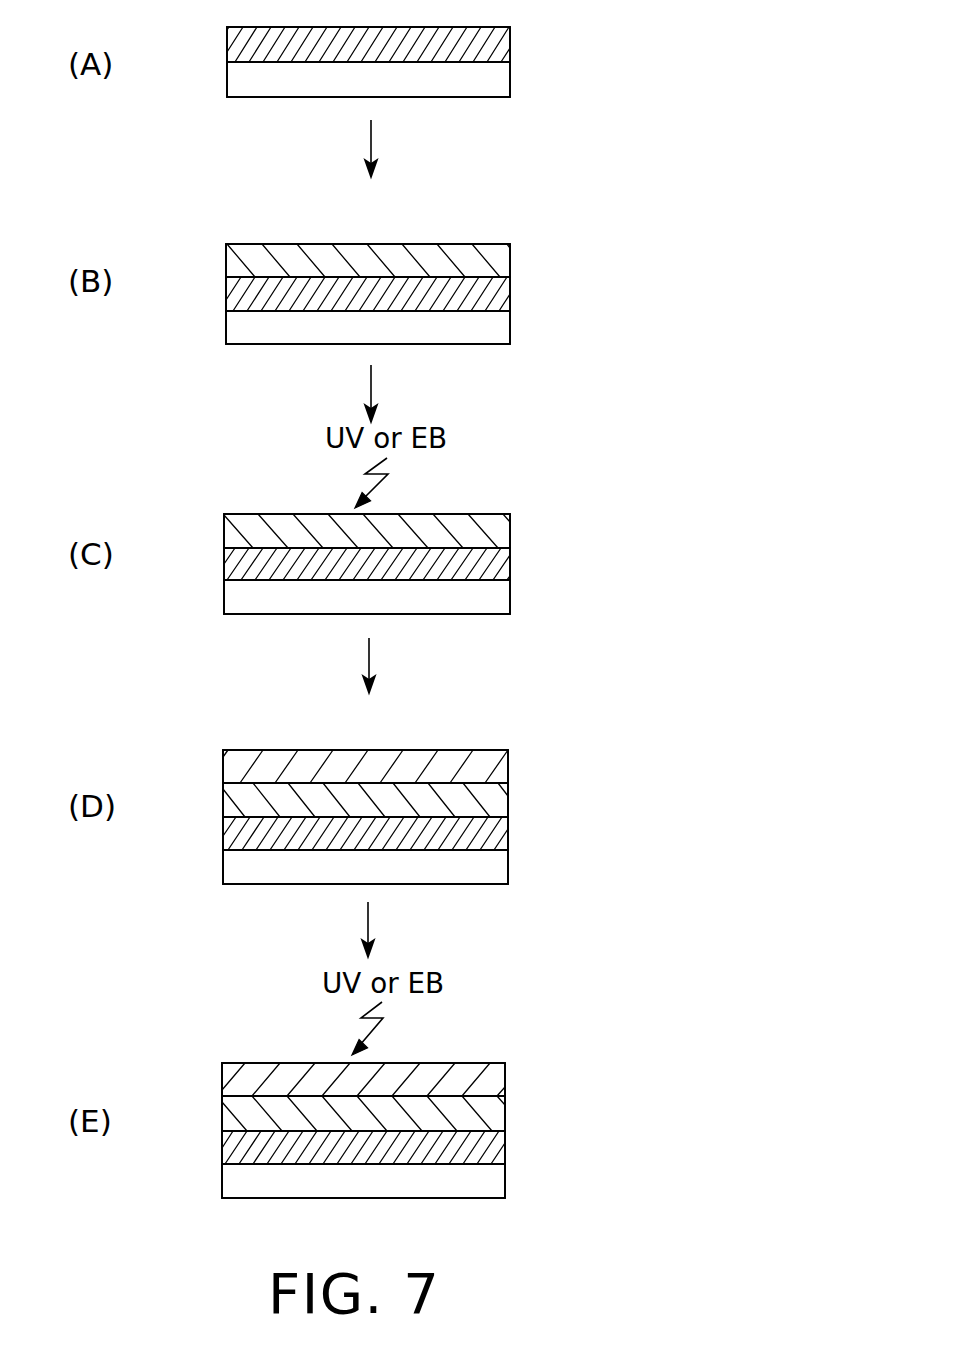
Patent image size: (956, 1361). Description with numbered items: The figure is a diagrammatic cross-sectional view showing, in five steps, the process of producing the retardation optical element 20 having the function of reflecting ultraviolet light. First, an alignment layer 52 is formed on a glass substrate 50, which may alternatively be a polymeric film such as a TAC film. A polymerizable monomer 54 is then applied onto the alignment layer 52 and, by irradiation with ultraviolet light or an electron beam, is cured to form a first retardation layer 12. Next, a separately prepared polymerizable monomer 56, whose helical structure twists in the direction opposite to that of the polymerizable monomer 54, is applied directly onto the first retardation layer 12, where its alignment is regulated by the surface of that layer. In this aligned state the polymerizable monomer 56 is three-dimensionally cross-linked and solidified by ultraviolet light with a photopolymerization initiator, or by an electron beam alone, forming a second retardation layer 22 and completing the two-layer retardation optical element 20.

The glass substrate 50 is at (503, 84).
The alignment layer 52 is at (503, 42).
The polymerizable monomer 54 is at (503, 258).
The first retardation layer 12 is at (503, 528).
The polymerizable monomer 56 is at (501, 762).
The second retardation layer 22 is at (498, 1077).
The retardation optical element 20 is at (490, 1050).